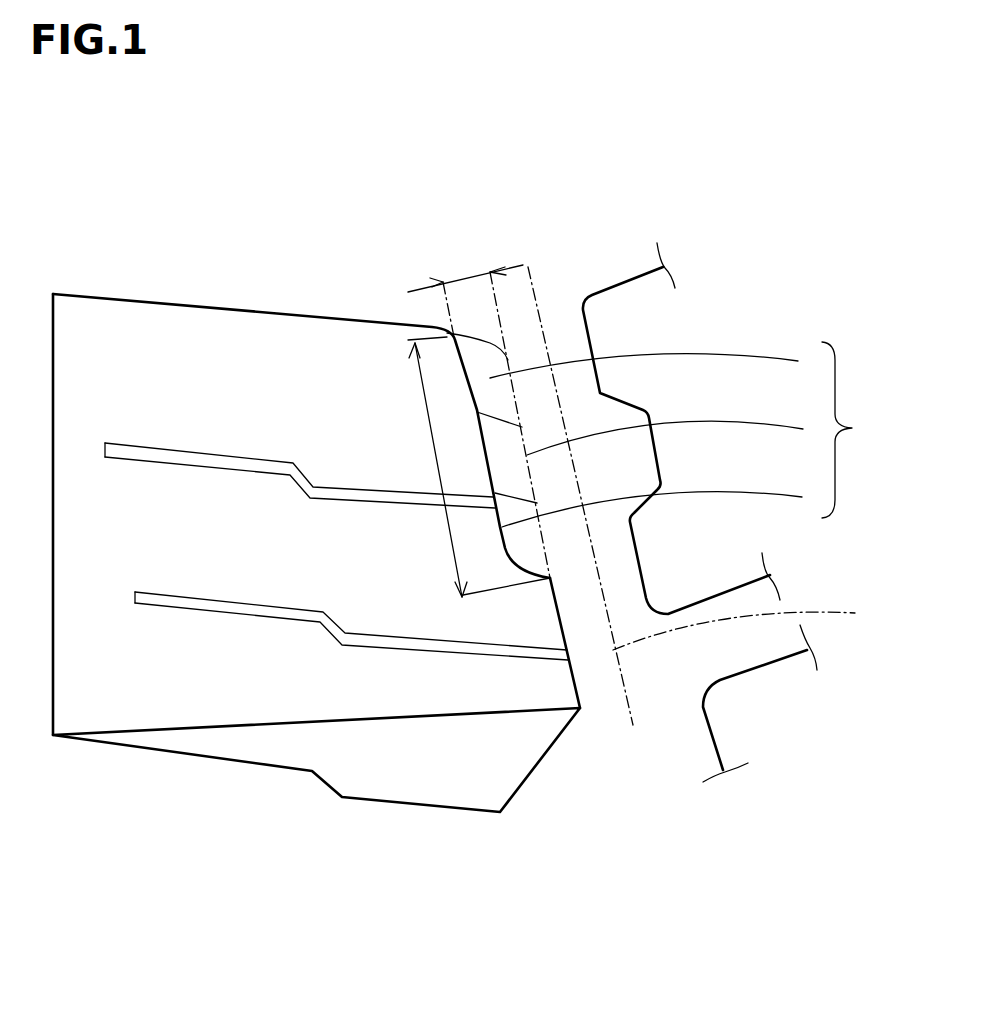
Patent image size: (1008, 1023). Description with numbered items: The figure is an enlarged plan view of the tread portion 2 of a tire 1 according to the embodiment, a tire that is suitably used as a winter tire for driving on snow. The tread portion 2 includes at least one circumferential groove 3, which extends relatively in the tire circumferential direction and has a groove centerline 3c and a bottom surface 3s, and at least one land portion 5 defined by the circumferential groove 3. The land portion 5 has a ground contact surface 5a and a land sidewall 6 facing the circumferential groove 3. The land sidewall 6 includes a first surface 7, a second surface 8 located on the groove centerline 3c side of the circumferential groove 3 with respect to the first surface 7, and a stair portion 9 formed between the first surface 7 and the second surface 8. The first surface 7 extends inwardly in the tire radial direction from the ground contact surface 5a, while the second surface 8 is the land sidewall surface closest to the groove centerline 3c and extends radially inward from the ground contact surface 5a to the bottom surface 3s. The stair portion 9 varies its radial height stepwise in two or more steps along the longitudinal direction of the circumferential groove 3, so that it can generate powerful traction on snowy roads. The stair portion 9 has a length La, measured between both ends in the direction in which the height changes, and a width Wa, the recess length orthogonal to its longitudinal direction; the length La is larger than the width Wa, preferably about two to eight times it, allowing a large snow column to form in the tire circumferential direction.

The tire 1 is at (758, 203).
The tread portion 2 is at (647, 227).
The circumferential groove 3 is at (598, 685).
The bottom surface 3s is at (567, 628).
The groove centerline 3c is at (752, 625).
The land portion 5 is at (242, 718).
The ground contact surface 5a is at (274, 409).
The land sidewall 6 is at (849, 430).
The first surface 7 is at (663, 504).
The second surface 8 is at (675, 434).
The stair portion 9 is at (657, 363).
The length of the stair portion La is at (427, 410).
The width of the stair portion Wa is at (465, 262).